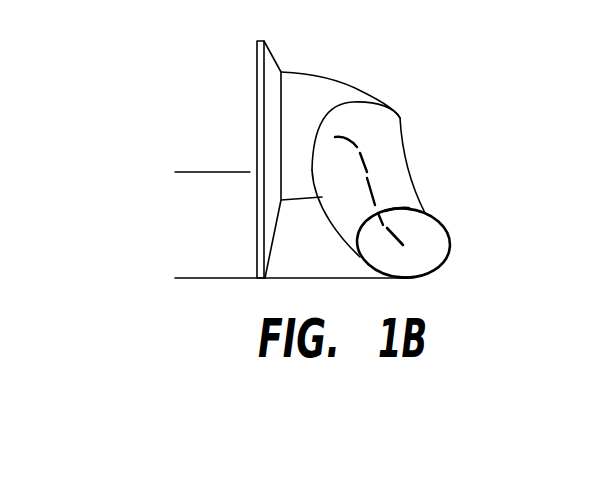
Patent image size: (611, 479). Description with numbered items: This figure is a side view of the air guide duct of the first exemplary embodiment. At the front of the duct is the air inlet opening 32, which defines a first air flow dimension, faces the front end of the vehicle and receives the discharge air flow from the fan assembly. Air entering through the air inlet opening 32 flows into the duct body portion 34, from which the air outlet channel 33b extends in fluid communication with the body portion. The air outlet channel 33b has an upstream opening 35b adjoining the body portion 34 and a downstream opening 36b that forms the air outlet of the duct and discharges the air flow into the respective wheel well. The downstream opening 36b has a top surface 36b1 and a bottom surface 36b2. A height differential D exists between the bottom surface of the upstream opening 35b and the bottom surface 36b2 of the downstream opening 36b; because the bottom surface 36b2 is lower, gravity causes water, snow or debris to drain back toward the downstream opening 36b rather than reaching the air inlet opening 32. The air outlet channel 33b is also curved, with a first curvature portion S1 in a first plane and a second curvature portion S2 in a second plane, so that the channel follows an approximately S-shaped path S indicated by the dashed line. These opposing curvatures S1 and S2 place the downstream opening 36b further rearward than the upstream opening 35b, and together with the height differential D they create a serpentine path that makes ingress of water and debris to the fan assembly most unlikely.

The air inlet opening 32 is at (273, 53).
The duct body portion 34 is at (332, 78).
The air outlet channel 33b is at (387, 150).
The upstream opening 35b is at (378, 123).
The downstream opening 36b is at (427, 248).
The top surface of downstream opening 36b1 is at (397, 206).
The bottom surface of downstream opening 36b2 is at (410, 278).
The S-shaped channel path S is at (373, 183).
The first curvature portion S1 is at (350, 138).
The second curvature portion S2 is at (390, 235).
The height differential D is at (187, 172).